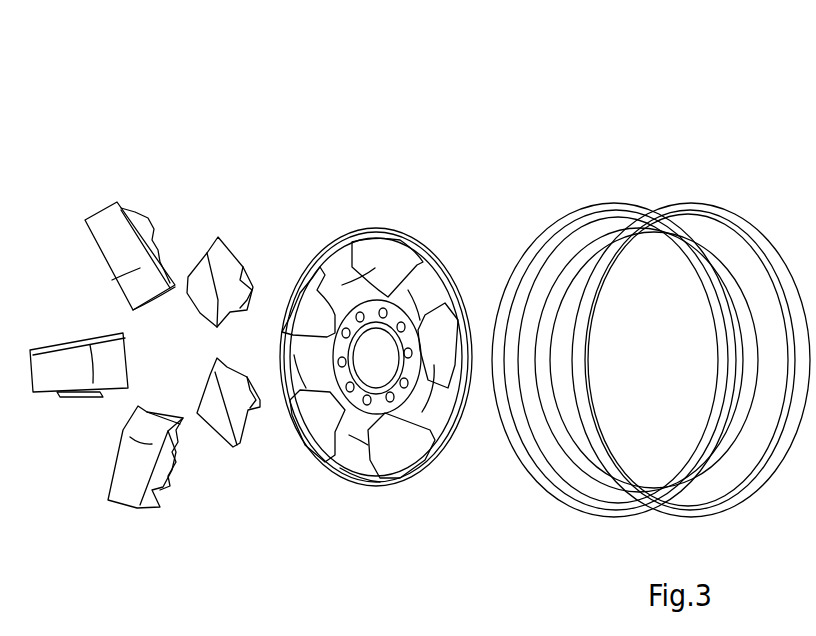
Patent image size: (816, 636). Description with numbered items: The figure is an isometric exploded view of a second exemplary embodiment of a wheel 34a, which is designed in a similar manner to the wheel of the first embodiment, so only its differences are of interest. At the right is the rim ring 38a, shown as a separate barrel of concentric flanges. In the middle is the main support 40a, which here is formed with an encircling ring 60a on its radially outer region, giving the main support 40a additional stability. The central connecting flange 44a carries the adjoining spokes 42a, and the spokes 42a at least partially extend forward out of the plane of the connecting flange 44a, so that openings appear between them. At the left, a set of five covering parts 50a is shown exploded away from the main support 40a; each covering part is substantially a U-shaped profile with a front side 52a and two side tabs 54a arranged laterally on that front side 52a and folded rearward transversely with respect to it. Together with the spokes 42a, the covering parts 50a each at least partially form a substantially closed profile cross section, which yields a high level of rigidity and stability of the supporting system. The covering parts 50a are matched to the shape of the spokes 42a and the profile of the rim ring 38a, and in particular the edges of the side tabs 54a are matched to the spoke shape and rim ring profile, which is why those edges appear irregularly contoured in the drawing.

The wheel 34a is at (146, 103).
The rim ring 38a is at (616, 178).
The main support 40a is at (361, 206).
The spokes 42a is at (335, 262).
The connecting flange 44a is at (399, 430).
The covering parts 50a is at (212, 258).
The front side 52a is at (103, 218).
The side tabs 54a is at (143, 228).
The encircling ring 60a is at (405, 235).